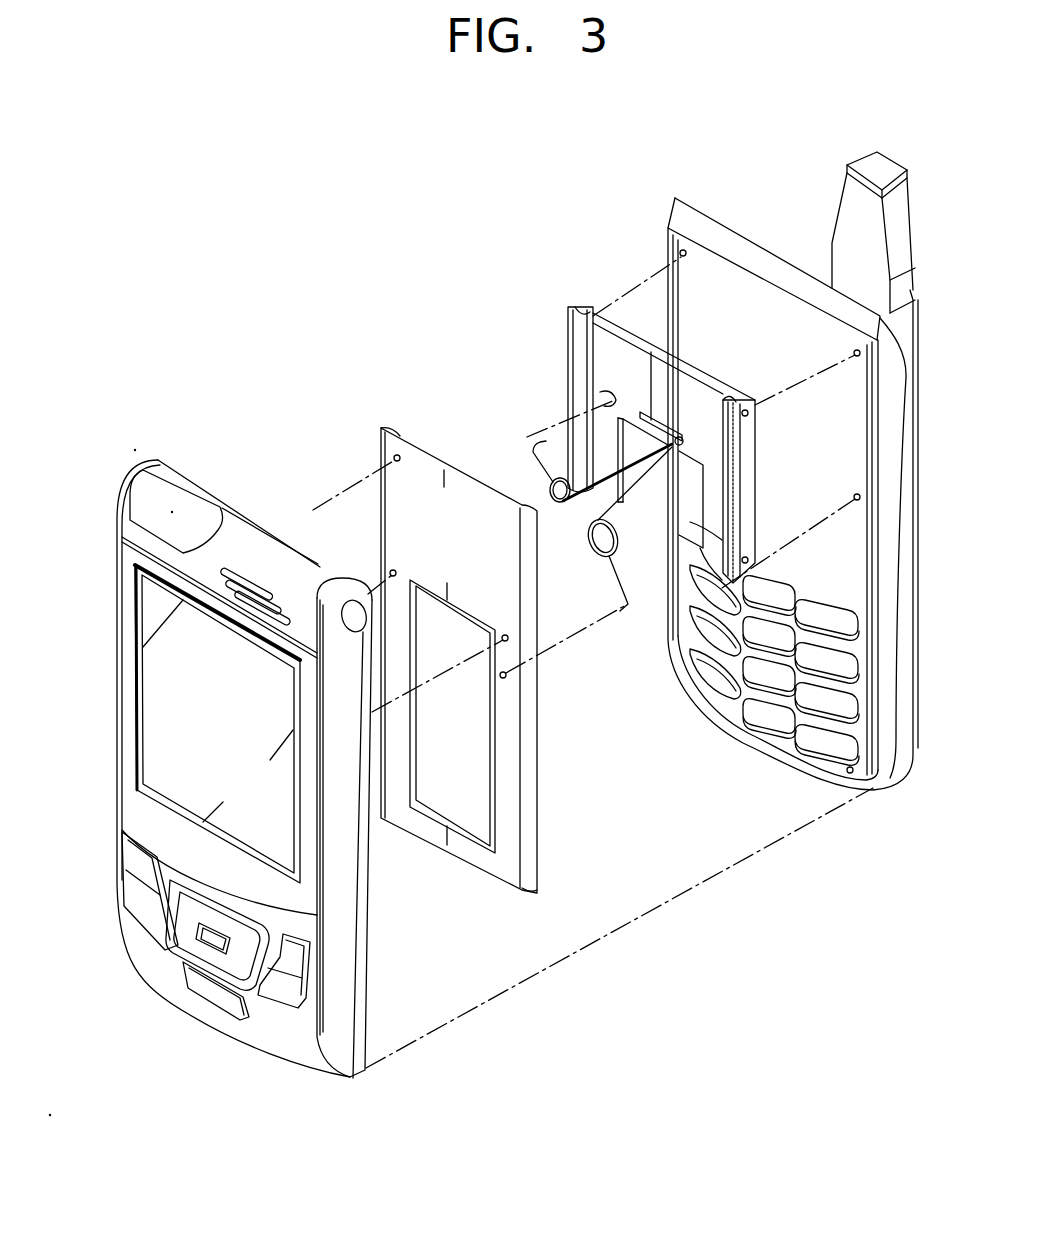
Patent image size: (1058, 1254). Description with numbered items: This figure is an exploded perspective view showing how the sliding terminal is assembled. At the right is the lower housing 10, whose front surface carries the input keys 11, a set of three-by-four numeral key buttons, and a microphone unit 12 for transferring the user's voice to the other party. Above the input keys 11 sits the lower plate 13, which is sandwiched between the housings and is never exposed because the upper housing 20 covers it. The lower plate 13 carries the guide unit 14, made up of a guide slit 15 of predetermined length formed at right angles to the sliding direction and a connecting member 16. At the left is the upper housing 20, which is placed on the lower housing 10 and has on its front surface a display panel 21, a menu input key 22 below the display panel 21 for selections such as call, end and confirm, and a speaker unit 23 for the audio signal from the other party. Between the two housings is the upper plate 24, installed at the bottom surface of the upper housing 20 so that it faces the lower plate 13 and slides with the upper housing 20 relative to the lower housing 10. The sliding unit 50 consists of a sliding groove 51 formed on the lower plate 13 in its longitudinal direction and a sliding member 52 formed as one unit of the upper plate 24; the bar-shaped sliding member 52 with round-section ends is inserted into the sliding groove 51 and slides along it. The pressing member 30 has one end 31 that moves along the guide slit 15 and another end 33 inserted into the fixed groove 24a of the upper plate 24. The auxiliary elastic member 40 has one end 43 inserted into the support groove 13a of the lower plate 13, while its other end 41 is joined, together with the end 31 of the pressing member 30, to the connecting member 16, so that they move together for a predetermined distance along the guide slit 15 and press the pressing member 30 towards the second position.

The lower housing 10 is at (895, 789).
The input keys 11 is at (780, 727).
The microphone unit 12 is at (845, 771).
The lower plate 13 is at (606, 333).
The support groove 13a is at (604, 396).
The guide unit 14 is at (617, 528).
The guide slit 15 is at (640, 430).
The connecting member 16 is at (670, 445).
The upper housing 20 is at (166, 1000).
The display panel 21 is at (163, 684).
The menu input key 22 is at (215, 998).
The speaker unit 23 is at (256, 592).
The upper plate 24 is at (419, 470).
The fixed groove 24a is at (508, 677).
The pressing member 30 is at (610, 585).
The one end of the pressing member 31 is at (592, 504).
The other end of the pressing member 33 is at (619, 614).
The auxiliary elastic member 40 is at (532, 458).
The long arm of auxiliary spring 41 is at (568, 458).
The one end of the auxiliary elastic member 43 is at (533, 444).
The sliding unit 50 is at (523, 244).
The sliding groove 51 is at (575, 308).
The sliding member 52 is at (383, 428).